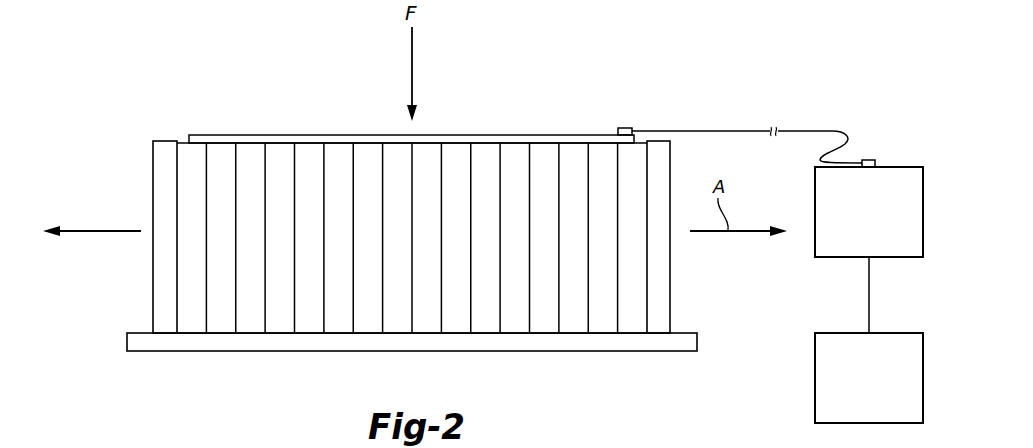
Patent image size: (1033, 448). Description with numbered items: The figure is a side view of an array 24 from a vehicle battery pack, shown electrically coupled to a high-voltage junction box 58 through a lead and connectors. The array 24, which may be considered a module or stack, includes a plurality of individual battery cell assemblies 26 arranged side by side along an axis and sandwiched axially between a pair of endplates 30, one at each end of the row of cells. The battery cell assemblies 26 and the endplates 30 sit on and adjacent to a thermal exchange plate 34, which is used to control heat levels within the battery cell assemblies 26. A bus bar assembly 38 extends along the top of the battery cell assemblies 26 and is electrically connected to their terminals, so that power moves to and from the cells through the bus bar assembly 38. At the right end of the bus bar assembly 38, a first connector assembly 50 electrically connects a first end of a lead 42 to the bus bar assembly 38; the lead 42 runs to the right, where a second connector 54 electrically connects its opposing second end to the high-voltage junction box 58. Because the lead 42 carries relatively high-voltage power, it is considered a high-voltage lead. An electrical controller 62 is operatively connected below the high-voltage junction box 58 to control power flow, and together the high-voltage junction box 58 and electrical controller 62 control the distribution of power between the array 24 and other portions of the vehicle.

The array 24 is at (426, 230).
The battery cell assemblies 26 is at (220, 143).
The endplates 30 is at (670, 157).
The thermal exchange plate 34 is at (610, 351).
The bus bar assembly 38 is at (541, 135).
The lead 42 is at (753, 131).
The first connector assembly 50 is at (625, 128).
The second connector 54 is at (875, 163).
The high-voltage junction box 58 is at (882, 250).
The electrical controller 62 is at (882, 404).